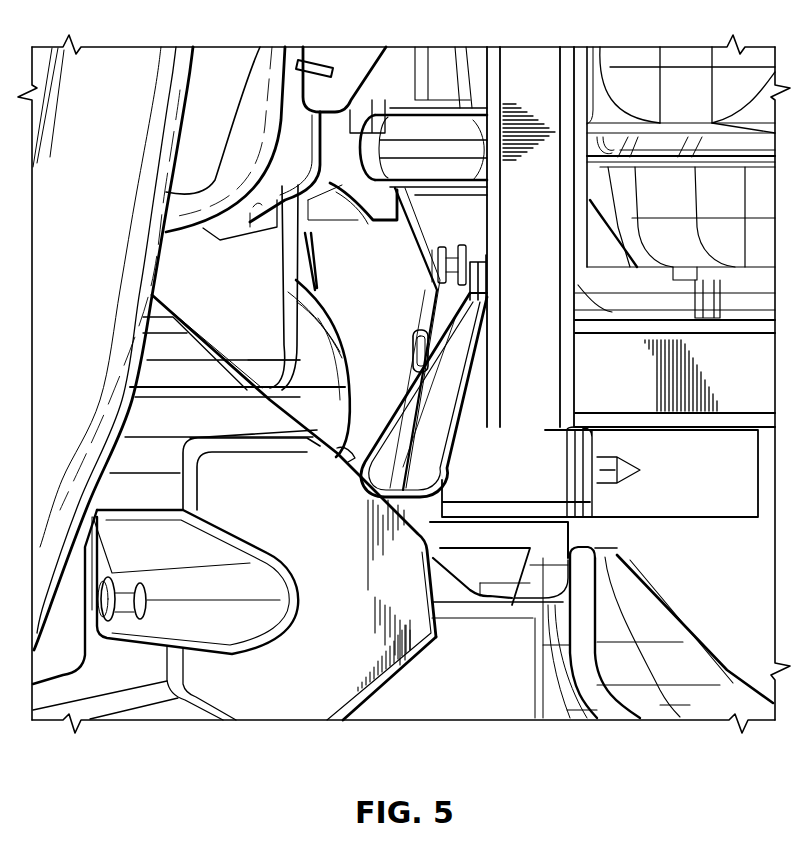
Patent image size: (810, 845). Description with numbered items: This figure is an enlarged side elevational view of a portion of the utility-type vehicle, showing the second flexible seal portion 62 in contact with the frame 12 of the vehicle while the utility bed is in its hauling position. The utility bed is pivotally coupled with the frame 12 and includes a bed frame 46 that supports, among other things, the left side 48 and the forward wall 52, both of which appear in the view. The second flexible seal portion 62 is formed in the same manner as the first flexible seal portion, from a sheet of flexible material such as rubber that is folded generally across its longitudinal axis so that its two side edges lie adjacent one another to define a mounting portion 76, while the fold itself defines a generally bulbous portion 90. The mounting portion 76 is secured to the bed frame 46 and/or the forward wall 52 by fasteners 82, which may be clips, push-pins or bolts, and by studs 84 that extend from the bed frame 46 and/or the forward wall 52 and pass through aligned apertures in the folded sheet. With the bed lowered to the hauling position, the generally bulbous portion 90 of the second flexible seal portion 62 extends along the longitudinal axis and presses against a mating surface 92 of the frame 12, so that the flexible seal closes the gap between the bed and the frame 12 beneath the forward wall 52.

The frame 12 is at (369, 700).
The bed frame 46 is at (533, 60).
The left side 48 is at (680, 80).
The forward wall 52 is at (470, 60).
The second flexible seal portion 62 is at (388, 410).
The mounting portion 76 is at (465, 226).
The fastener 82 is at (428, 243).
The stud 84 is at (412, 342).
The generally bulbous portion 90 is at (424, 472).
The mating surface 92 is at (350, 458).